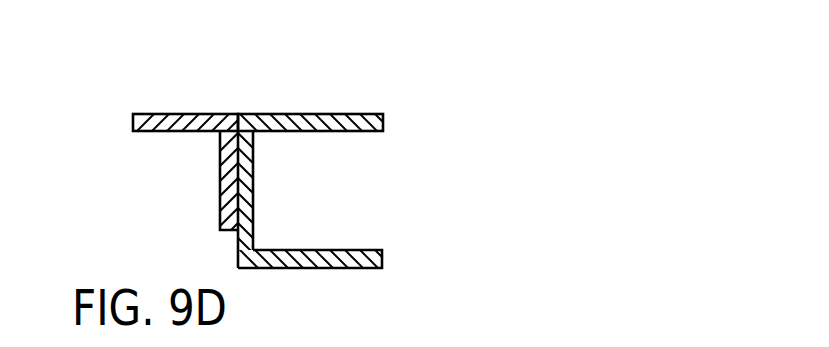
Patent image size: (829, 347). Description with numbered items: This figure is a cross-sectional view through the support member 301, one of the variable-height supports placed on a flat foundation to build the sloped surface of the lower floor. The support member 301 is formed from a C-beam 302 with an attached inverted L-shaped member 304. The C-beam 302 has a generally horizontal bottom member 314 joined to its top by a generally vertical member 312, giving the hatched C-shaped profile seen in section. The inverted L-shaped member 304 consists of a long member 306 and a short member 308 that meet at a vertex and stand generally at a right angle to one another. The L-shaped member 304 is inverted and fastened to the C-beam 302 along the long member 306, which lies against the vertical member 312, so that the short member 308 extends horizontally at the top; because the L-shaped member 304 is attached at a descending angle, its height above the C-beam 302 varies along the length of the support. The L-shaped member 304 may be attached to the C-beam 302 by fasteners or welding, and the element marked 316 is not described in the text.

The support member 301 is at (436, 99).
The C-beam 302 is at (343, 131).
The inverted L-shaped member 304 is at (173, 131).
The long member 306 is at (220, 192).
The short member 308 is at (148, 114).
The vertical member 312 is at (254, 217).
The bottom member 314 is at (363, 268).
The flange surface 316 is at (338, 114).